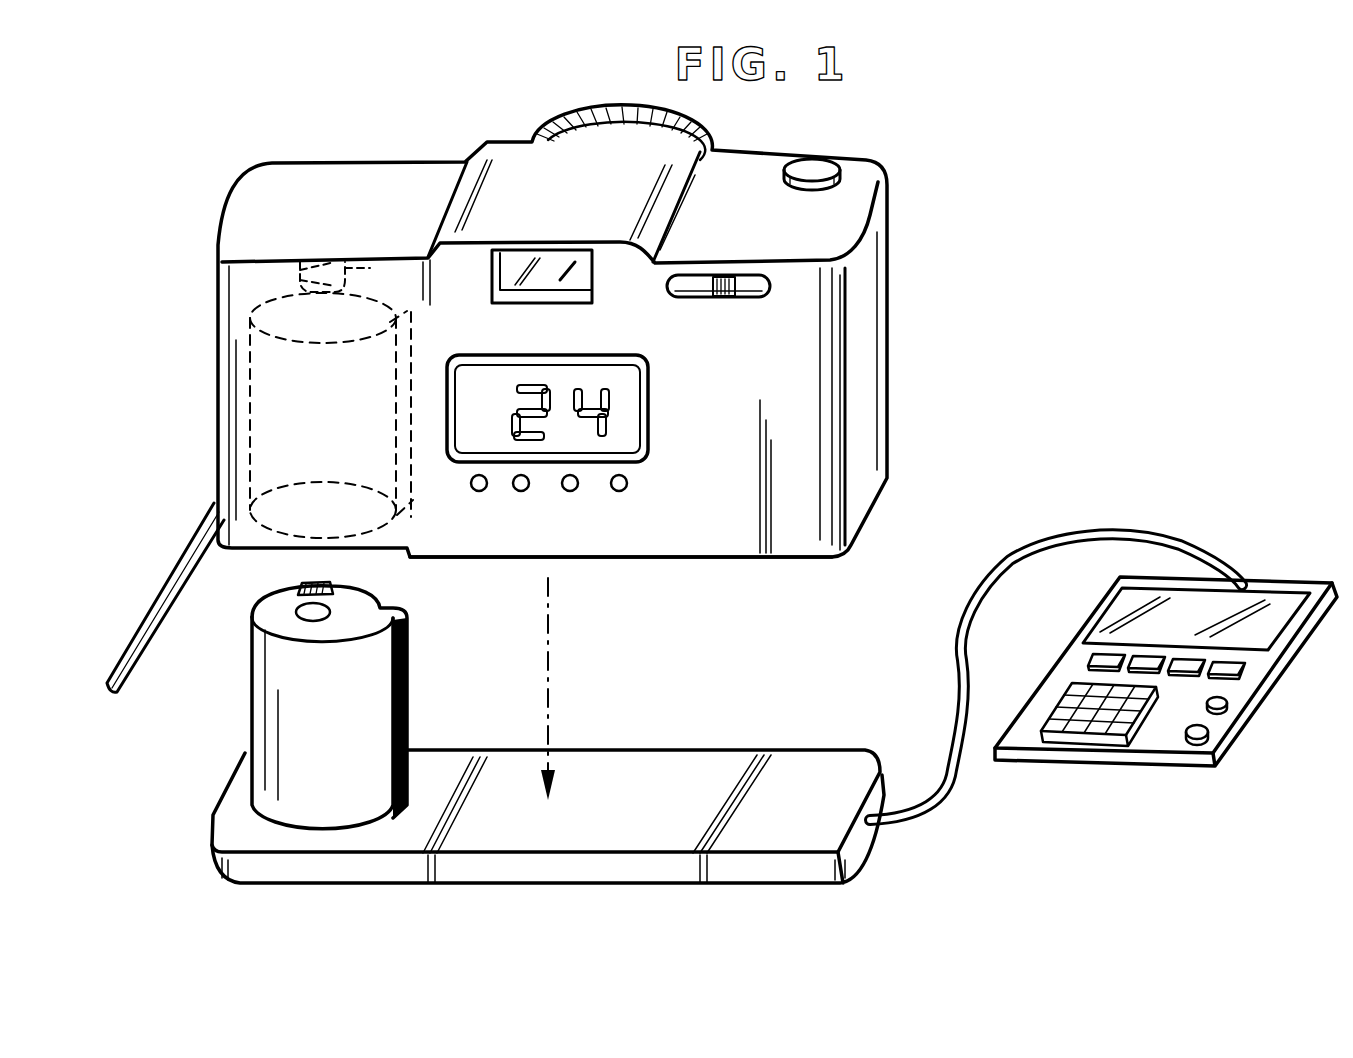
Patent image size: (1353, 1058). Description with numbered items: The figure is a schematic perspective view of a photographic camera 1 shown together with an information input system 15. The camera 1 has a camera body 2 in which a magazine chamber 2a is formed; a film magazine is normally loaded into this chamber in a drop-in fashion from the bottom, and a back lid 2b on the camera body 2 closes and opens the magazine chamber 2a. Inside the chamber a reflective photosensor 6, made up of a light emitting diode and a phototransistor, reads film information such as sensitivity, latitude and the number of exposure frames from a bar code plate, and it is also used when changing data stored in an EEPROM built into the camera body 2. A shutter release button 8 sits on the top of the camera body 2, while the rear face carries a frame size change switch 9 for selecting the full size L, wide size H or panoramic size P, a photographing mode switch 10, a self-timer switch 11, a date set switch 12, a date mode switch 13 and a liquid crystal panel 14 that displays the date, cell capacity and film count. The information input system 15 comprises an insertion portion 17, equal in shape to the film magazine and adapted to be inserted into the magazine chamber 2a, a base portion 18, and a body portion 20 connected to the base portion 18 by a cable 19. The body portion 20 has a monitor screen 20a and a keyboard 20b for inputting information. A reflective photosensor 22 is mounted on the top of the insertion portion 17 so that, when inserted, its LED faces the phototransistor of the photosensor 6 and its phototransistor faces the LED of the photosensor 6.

The camera 1 is at (898, 267).
The camera body 2 is at (740, 558).
The magazine chamber 2a is at (253, 402).
The back lid 2b is at (165, 615).
The reflective photosensor 6 is at (333, 260).
The shutter release button 8 is at (822, 163).
The frame size change switch 9 is at (720, 275).
The photographing mode switch 10 is at (484, 491).
The self-timer switch 11 is at (526, 491).
The date set switch 12 is at (575, 491).
The date mode switch 13 is at (624, 491).
The liquid crystal panel 14 is at (623, 437).
The information input system 15 is at (1103, 621).
The insertion portion 17 is at (272, 702).
The base portion 18 is at (777, 752).
The cable 19 is at (1050, 538).
The body portion 20 is at (1166, 666).
The monitor screen 20a is at (1265, 620).
The keyboard 20b is at (1050, 740).
The reflective photosensor 22 is at (330, 583).